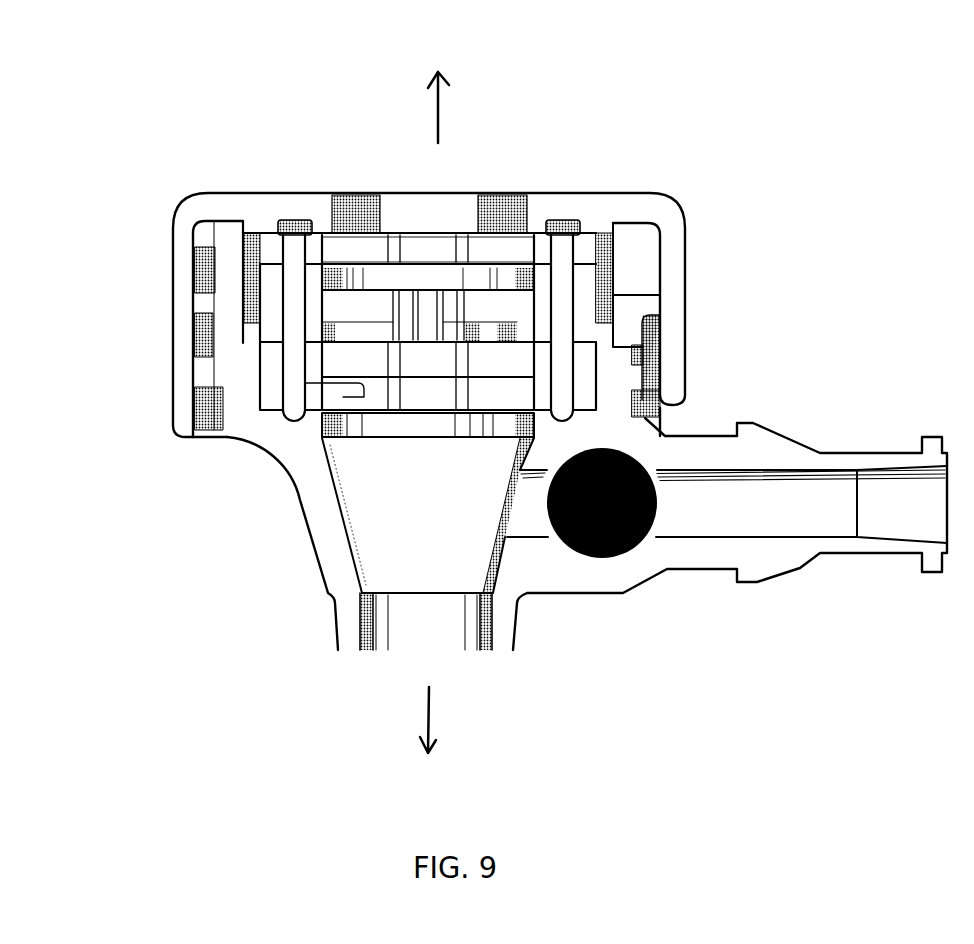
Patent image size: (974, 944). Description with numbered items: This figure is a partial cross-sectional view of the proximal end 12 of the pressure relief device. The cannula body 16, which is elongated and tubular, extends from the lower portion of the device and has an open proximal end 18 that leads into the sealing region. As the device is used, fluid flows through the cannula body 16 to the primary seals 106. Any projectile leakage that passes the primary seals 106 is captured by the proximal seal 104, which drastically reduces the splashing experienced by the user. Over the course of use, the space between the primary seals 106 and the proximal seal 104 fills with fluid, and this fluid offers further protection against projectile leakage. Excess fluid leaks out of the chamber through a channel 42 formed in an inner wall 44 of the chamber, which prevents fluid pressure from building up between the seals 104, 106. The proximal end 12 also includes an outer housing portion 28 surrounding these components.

The proximal end 12 is at (818, 220).
The cannula body 16 is at (333, 637).
The open proximal end 18 is at (200, 570).
The cap 28 is at (185, 218).
The channel 42 is at (212, 330).
The inner wall 44 is at (190, 278).
The proximal seal 104 is at (592, 248).
The primary seals 106 is at (597, 390).